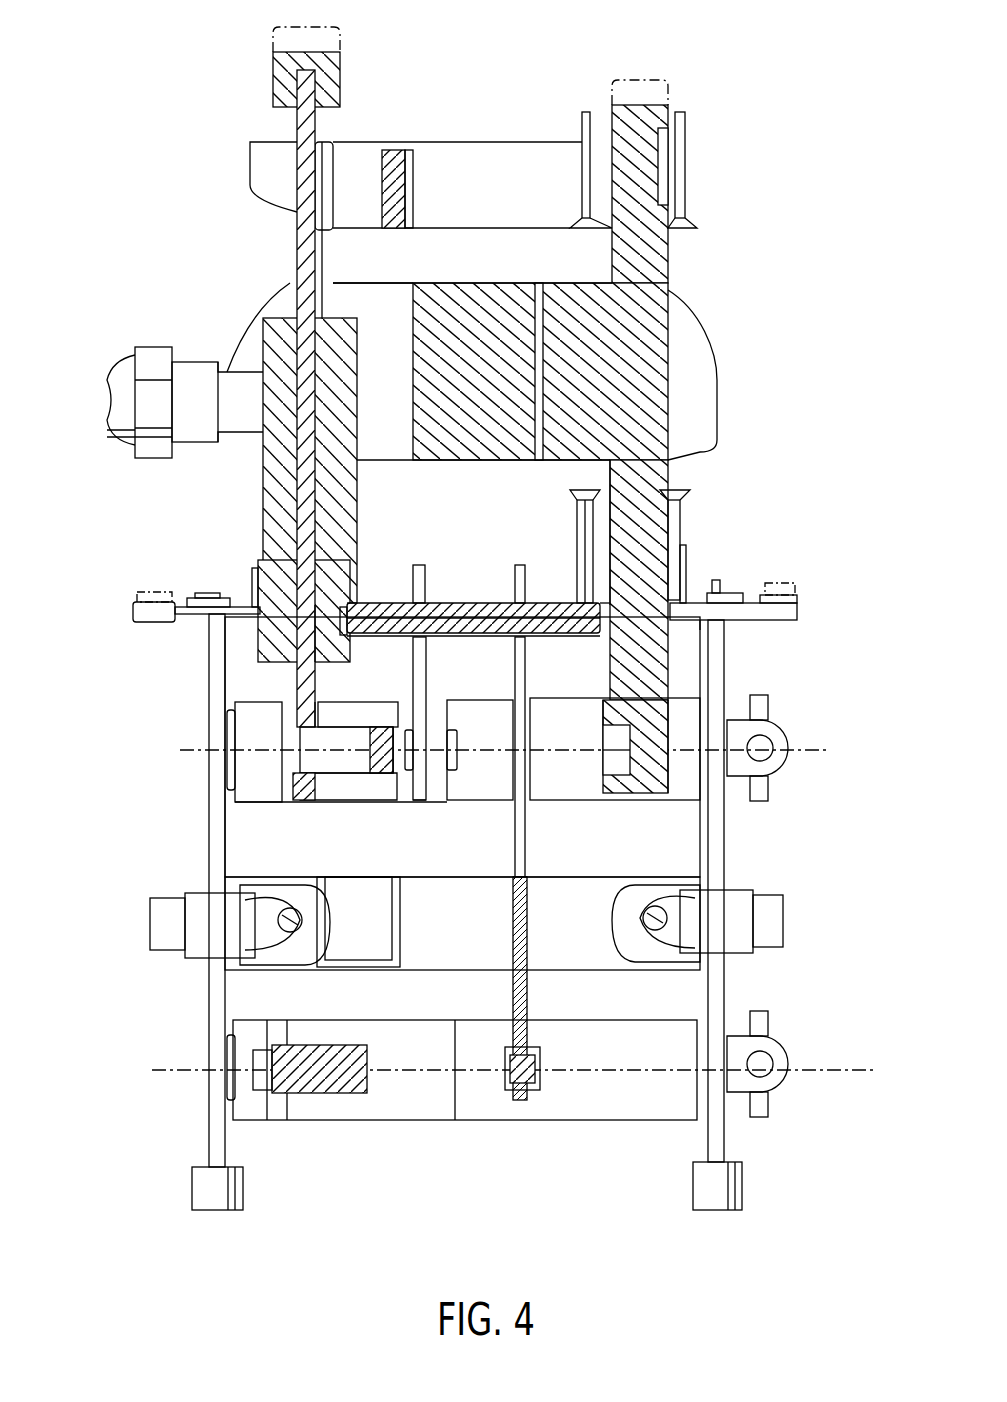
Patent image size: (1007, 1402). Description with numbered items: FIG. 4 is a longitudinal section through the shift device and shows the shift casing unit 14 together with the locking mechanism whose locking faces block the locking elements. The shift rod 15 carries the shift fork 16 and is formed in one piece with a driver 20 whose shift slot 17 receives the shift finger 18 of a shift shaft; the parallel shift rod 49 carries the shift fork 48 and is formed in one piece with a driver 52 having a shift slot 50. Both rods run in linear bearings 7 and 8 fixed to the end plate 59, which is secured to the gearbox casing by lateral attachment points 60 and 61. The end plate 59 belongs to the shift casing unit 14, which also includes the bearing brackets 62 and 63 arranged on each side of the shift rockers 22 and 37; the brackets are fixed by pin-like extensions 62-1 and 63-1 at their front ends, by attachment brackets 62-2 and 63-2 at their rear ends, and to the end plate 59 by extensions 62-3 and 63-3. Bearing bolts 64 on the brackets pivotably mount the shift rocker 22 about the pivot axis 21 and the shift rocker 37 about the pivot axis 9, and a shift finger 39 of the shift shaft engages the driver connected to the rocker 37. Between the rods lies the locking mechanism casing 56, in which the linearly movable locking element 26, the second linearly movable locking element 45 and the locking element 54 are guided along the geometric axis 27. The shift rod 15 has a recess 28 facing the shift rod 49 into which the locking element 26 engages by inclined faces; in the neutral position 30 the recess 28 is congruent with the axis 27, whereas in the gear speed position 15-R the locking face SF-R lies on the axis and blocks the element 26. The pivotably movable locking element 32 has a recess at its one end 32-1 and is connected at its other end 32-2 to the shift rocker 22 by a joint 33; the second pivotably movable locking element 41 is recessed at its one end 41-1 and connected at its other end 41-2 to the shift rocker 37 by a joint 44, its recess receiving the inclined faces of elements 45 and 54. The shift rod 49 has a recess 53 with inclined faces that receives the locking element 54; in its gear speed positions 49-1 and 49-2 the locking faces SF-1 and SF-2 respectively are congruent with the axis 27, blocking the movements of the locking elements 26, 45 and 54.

The gear speed position 15-R is at (273, 27).
The neutral position 30 is at (273, 52).
The shift fork 16 is at (445, 142).
The gear speed position 49-1 is at (668, 84).
The gear speed position 49-2 is at (668, 148).
The shift rod 15 is at (299, 264).
The shift rod 49 is at (668, 285).
The shift fork 48 is at (710, 353).
The extension 62-3 is at (212, 593).
The attachment bracket 62-2 is at (140, 592).
The lateral attachment point 60 is at (197, 598).
The linear bearing 7 is at (252, 600).
The locking face SF-2 is at (570, 600).
The linearly movable locking element 26 is at (390, 630).
The second linearly movable locking element 45 is at (480, 628).
The linearly movable locking element 54 is at (562, 628).
The end of pivotably movable locking element 32-1 is at (417, 565).
The end of second pivotably movable locking element 41-1 is at (521, 580).
The linear bearing 8 is at (682, 528).
The extension 63-3 is at (718, 582).
The recess 53 is at (695, 545).
The lateral attachment point 61 is at (735, 590).
The attachment bracket 63-2 is at (782, 588).
The geometric axis 27 is at (237, 635).
The recess 28 is at (345, 630).
The locking face SF-R is at (351, 695).
The pivotably movable locking element 32 is at (425, 637).
The locking mechanism casing 56 is at (466, 640).
The end plate 59 is at (703, 620).
The geometric pivot axis 21 is at (230, 750).
The shift finger 18 is at (354, 761).
The joint 33 is at (450, 760).
The locking face SF-1 is at (567, 719).
The bearing bolts 64 is at (745, 720).
The shift slot 17 is at (299, 727).
The shift slot 50 is at (614, 750).
The bearing bracket 62 is at (218, 820).
The driver 20 is at (298, 800).
The end of pivotably movable locking element 32-2 is at (420, 800).
The shift rocker 22 is at (496, 798).
The second pivotably movable locking element 41 is at (534, 800).
The driver 52 is at (640, 800).
The shift casing unit 14 is at (790, 912).
The bearing bracket 63 is at (728, 985).
The geometric pivot axis 9 is at (858, 1068).
The shift finger 39 is at (298, 1093).
The shift rocker 37 is at (394, 1119).
The end of second pivotably movable locking element 41-2 is at (522, 1100).
The joint 44 is at (550, 1080).
The pin-like extension 62-1 is at (215, 1212).
The pin-like extension 63-1 is at (722, 1212).